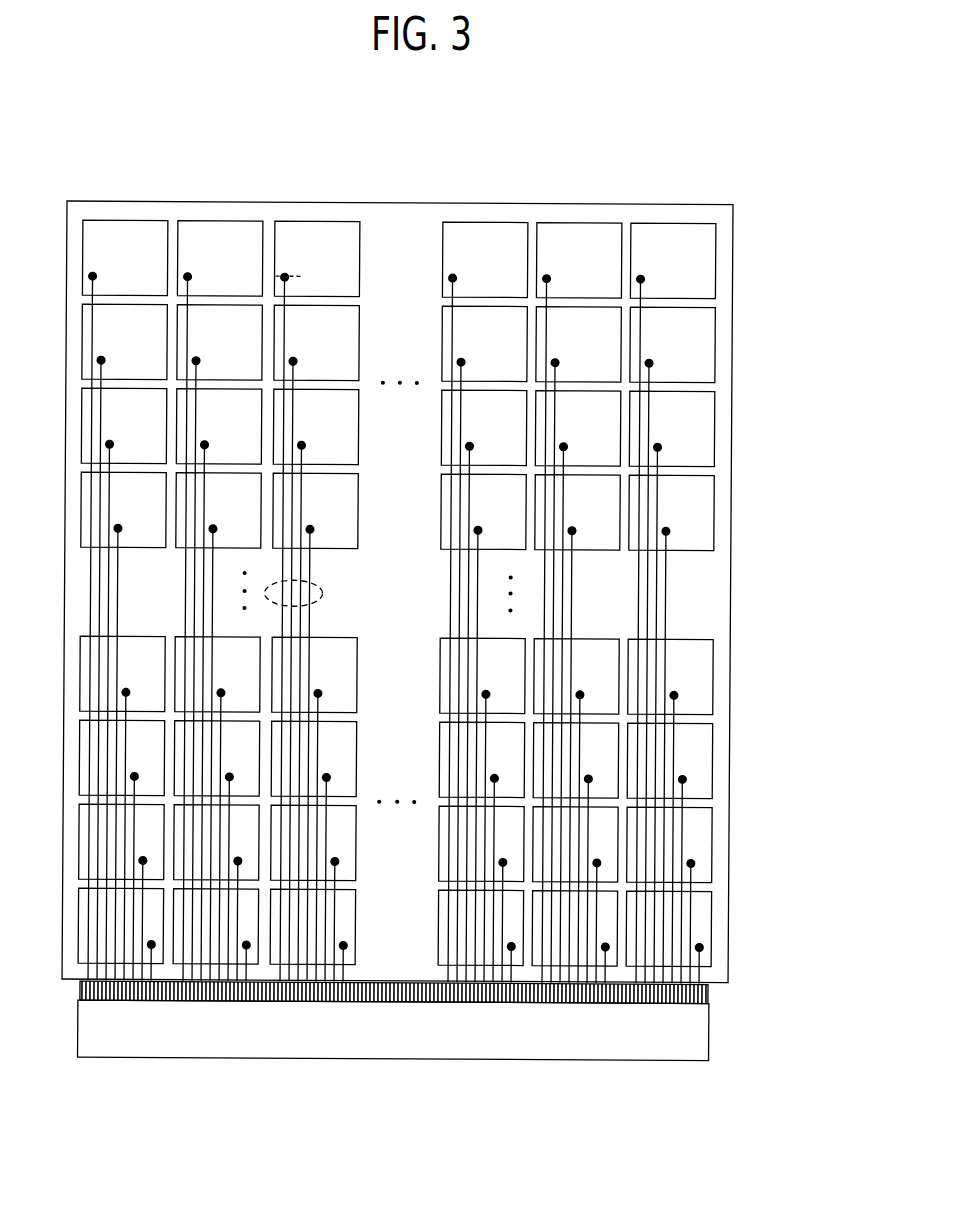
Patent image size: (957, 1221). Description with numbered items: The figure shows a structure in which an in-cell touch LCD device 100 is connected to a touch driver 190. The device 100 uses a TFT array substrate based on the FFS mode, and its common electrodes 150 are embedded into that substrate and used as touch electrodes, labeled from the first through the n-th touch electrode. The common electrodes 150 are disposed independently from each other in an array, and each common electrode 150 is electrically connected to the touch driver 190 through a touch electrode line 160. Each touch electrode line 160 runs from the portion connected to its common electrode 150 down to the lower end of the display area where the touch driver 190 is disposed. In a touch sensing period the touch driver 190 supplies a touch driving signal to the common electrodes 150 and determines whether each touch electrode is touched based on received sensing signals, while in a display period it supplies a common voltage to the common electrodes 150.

The in-cell touch LCD device 100 is at (517, 201).
The common electrode 150 is at (717, 340).
The touch electrode line 160 is at (325, 591).
The touch driver 190 is at (416, 1042).